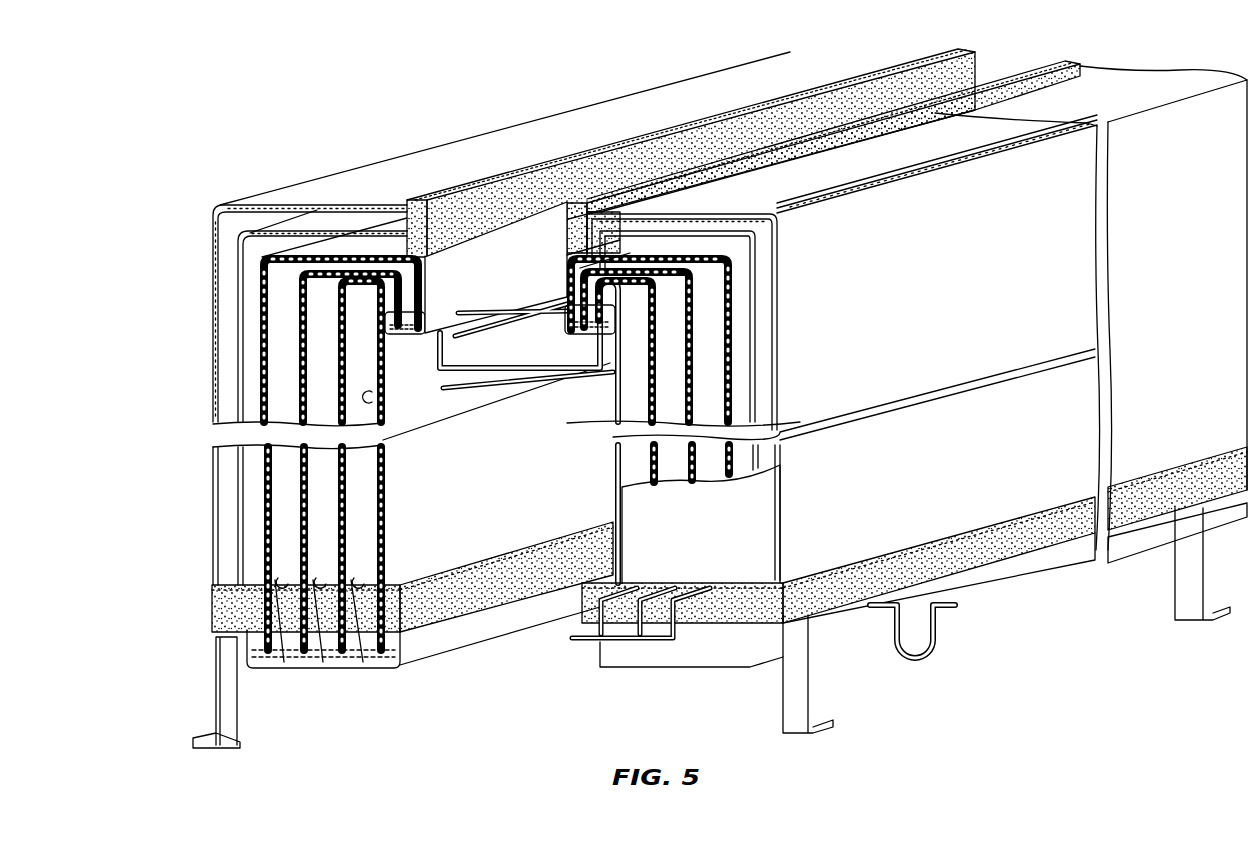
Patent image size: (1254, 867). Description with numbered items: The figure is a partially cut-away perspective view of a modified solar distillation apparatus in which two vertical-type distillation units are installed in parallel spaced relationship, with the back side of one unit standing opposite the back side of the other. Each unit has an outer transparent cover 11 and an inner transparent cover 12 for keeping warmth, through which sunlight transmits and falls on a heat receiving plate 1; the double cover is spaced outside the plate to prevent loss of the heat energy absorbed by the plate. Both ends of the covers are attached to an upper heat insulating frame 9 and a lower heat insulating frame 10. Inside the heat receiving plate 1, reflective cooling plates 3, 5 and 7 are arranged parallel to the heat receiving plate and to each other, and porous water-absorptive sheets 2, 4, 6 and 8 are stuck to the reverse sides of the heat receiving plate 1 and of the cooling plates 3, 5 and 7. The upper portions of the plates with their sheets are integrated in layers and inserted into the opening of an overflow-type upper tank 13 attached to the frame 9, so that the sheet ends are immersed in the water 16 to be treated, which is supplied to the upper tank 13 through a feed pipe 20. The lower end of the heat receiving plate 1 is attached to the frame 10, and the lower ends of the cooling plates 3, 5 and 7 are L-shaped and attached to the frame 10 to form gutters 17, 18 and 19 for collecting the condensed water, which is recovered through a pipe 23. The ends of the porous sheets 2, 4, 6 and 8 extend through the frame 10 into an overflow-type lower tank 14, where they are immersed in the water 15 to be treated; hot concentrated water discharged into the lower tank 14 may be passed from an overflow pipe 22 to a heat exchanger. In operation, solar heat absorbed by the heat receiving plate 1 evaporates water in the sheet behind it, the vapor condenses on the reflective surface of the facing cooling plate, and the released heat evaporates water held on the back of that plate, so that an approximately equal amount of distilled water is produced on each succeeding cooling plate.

The heat receiving plate 1 is at (262, 322).
The porous water-absorptive sheet 2 is at (270, 470).
The reflective cooling plate 3 is at (298, 357).
The porous water-absorptive sheet 4 is at (315, 492).
The reflective cooling plate 5 is at (338, 390).
The porous water-absorptive sheet 6 is at (347, 503).
The reflective cooling plate 7 is at (380, 401).
The porous water-absorptive sheet 8 is at (383, 543).
The heat insulating frame 9 is at (468, 193).
The heat insulating frame 10 is at (230, 608).
The transparent cover 11 is at (213, 220).
The transparent cover 12 is at (240, 277).
The upper tank 13 is at (469, 290).
The lower tank 14 is at (507, 622).
The water to be treated 15 is at (400, 668).
The water to be treated 16 is at (407, 332).
The gutter 17 is at (284, 663).
The gutter 18 is at (323, 663).
The gutter 19 is at (363, 663).
The feed pipe 20 is at (487, 382).
The overflow pipe 22 is at (950, 610).
The pipe for recovering distilled water 23 is at (578, 642).